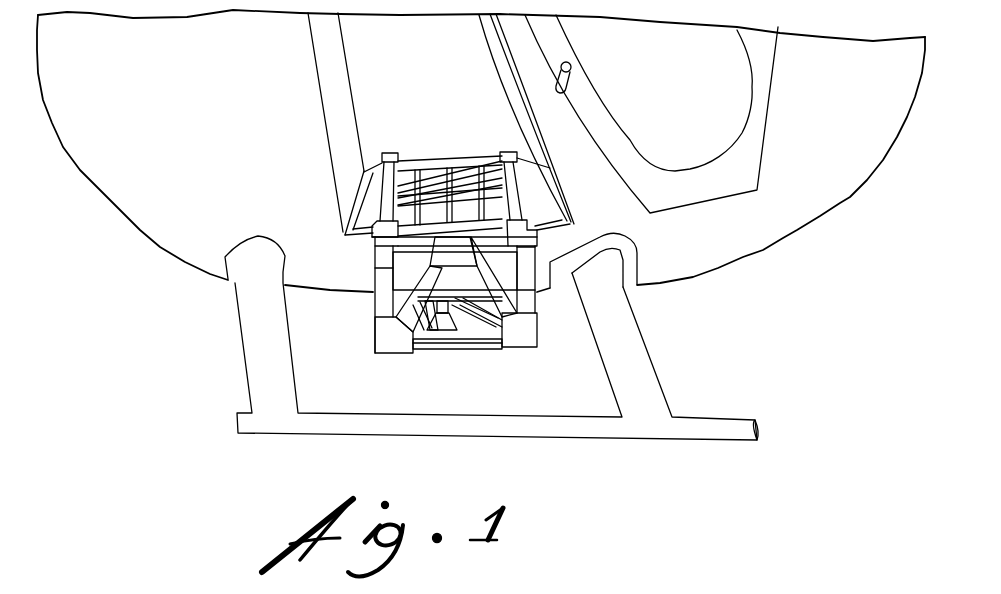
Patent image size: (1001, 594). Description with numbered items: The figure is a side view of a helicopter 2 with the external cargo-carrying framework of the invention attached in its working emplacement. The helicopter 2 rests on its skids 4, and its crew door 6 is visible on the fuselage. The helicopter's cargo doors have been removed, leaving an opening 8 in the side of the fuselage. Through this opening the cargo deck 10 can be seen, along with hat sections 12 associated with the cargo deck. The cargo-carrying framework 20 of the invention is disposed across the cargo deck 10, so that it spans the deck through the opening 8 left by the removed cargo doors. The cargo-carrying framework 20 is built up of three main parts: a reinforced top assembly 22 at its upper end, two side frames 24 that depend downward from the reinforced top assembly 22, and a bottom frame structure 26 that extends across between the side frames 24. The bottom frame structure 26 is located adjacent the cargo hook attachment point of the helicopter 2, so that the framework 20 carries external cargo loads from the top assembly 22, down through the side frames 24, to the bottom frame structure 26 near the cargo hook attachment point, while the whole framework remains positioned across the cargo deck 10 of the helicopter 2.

The helicopter 2 is at (784, 240).
The skids 4 is at (660, 391).
The crew door 6 is at (748, 98).
The opening 8 is at (433, 79).
The cargo deck 10 is at (383, 160).
The hat sections 12 is at (523, 157).
The cargo-carrying framework 20 is at (523, 358).
The reinforced top assembly 22 is at (477, 156).
The side frames 24 is at (373, 258).
The bottom frame structure 26 is at (447, 330).